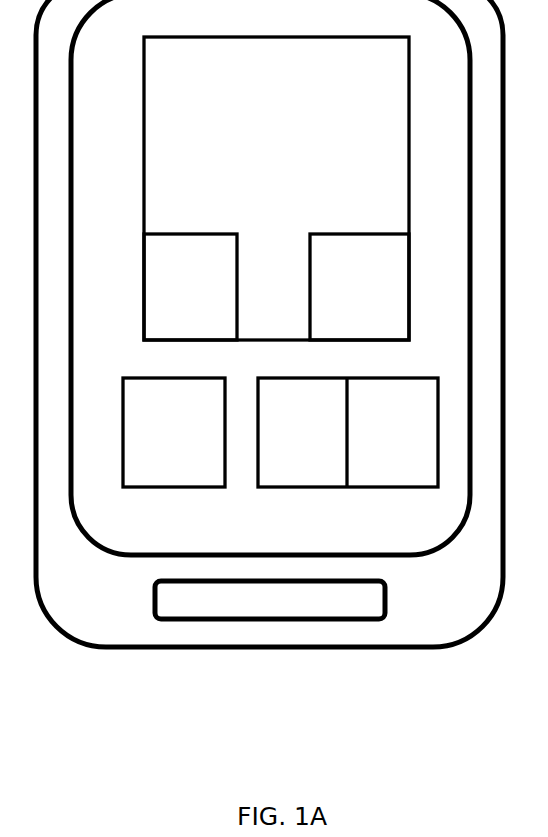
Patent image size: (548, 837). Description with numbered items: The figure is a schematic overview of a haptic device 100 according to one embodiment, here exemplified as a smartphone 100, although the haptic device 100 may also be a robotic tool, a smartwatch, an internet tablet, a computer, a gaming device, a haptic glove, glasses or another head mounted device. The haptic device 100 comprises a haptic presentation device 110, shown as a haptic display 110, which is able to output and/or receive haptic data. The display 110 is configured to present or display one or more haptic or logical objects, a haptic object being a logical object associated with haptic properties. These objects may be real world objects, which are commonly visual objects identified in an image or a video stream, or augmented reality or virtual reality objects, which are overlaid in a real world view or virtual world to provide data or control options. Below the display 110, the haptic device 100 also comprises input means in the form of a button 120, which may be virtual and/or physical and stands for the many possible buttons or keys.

The haptic device 100 is at (268, 395).
The haptic presentation device 110 is at (100, 548).
The button 120 is at (198, 619).